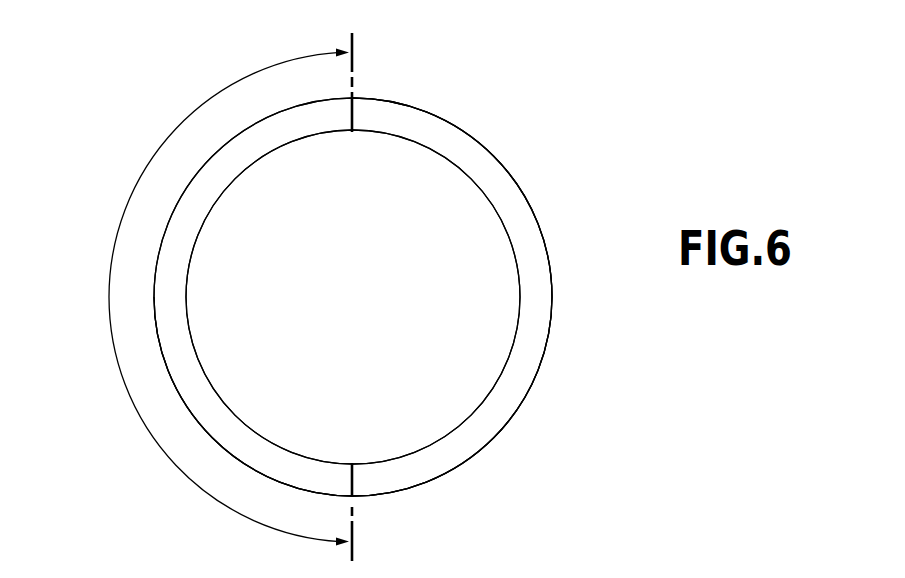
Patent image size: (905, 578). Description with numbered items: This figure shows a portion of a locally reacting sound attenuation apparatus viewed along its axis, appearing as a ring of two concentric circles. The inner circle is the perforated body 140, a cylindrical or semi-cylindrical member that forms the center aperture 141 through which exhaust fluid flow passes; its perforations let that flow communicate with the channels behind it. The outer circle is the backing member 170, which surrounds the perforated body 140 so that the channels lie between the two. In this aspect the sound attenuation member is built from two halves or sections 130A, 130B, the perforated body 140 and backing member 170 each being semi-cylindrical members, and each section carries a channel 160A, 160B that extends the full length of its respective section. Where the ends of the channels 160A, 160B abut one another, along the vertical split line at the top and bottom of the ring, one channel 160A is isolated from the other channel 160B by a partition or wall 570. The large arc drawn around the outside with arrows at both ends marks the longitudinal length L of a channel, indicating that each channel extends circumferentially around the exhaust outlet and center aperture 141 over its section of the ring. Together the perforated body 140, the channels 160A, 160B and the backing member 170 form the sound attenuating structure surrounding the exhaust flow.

The perforated body 140 is at (263, 155).
The center aperture 141 is at (443, 395).
The channel 160A is at (185, 358).
The channel 160B is at (537, 275).
The backing member 170 is at (520, 187).
The section 130A is at (142, 462).
The section 130B is at (600, 358).
The partition or wall 570 is at (355, 115).
The longitudinal length L is at (107, 296).